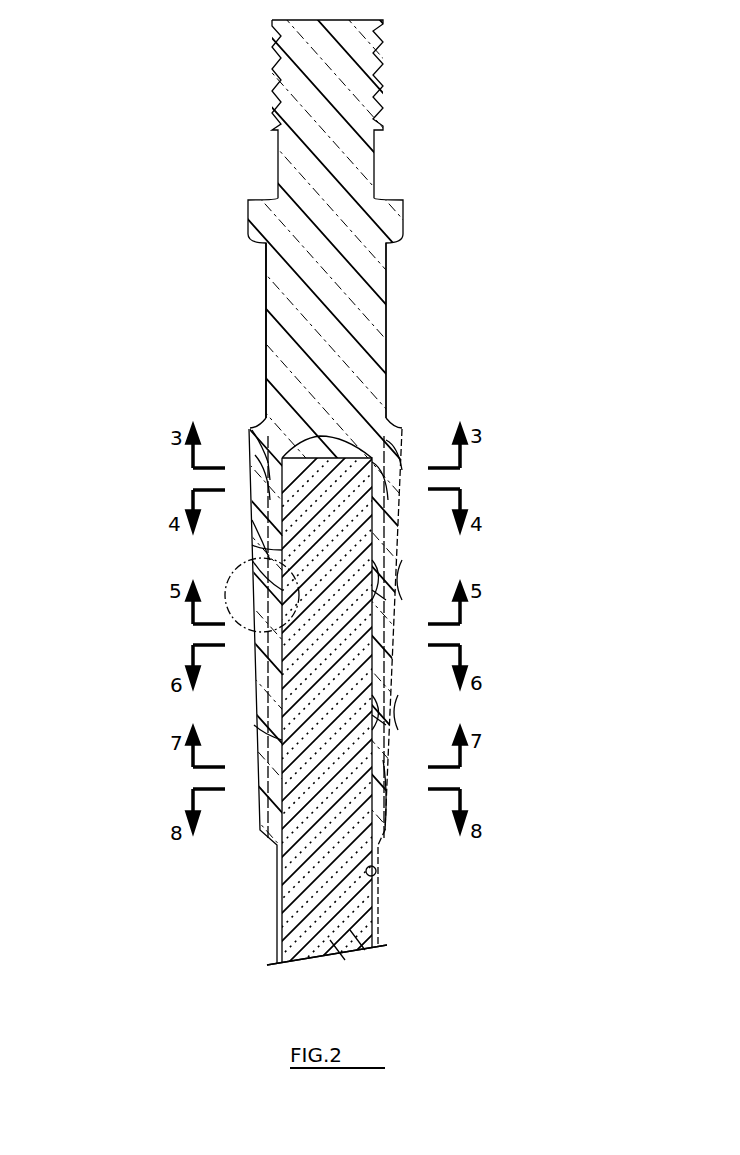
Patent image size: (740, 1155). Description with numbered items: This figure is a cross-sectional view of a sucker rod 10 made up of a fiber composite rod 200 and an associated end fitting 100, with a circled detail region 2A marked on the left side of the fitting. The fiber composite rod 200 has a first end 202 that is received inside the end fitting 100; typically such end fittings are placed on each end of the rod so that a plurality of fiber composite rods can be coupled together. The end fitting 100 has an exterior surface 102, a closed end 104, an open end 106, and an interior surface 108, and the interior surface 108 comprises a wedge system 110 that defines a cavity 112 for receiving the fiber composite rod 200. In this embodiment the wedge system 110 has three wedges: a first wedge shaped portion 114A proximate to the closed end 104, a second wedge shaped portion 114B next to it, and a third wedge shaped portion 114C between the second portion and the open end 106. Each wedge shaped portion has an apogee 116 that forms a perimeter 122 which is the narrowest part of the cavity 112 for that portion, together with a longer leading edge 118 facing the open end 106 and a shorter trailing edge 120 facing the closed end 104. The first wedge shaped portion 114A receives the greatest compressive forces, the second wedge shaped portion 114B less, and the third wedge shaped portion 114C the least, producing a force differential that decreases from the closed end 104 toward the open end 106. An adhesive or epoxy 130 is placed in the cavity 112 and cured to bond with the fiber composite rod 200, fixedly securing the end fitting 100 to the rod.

The sucker rod 10 is at (194, 266).
The end fitting 100 is at (370, 577).
The exterior surface 102 is at (387, 325).
The closed end 104 is at (358, 432).
The open end 106 is at (378, 900).
The interior surface 108 is at (376, 872).
The wedge system 110 is at (152, 458).
The cavity 112 is at (262, 535).
The first wedge shaped portion 114A is at (405, 440).
The second wedge shaped portion 114B is at (405, 590).
The third wedge shaped portion 114C is at (405, 722).
The apogee 116 is at (250, 556).
The leading edge 118 is at (255, 425).
The trailing edge 120 is at (255, 420).
The perimeter 122 is at (405, 430).
The adhesive or epoxy 130 is at (250, 552).
The fiber composite rod 200 is at (345, 955).
The first end 202 is at (388, 946).
The detail view 2A is at (223, 565).